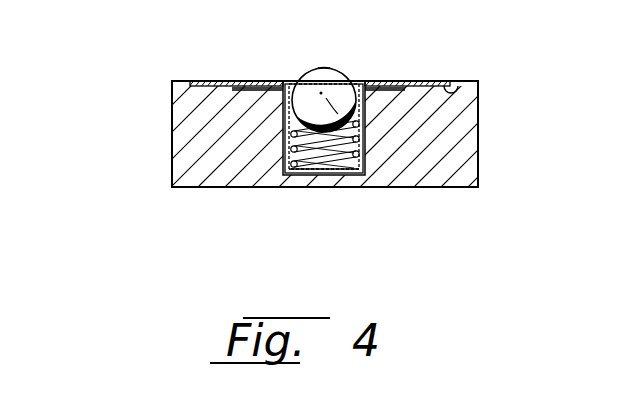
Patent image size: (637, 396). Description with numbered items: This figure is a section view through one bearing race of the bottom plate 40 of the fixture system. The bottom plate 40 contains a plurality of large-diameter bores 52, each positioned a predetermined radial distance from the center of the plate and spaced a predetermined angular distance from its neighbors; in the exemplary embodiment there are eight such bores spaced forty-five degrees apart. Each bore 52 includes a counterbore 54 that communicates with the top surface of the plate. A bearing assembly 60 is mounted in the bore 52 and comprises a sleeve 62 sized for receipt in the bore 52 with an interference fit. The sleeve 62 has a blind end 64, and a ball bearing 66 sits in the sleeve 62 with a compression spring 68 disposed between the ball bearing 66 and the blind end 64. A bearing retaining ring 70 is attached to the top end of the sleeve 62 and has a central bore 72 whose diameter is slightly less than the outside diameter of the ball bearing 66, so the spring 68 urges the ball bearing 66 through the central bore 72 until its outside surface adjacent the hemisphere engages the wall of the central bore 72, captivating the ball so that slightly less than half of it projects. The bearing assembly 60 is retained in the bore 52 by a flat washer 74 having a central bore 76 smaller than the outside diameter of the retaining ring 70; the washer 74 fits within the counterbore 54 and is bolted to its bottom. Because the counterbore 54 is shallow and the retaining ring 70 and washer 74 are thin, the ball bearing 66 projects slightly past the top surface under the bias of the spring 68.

The bottom plate 40 is at (160, 122).
The bore 52 is at (284, 136).
The counterbore 54 is at (462, 91).
The bearing assembly 60 is at (307, 60).
The sleeve 62 is at (364, 172).
The blind end 64 is at (316, 176).
The ball bearing 66 is at (318, 78).
The compression spring 68 is at (300, 175).
The bearing retaining ring 70 is at (366, 84).
The central bore 72 is at (286, 81).
The flat washer 74 is at (398, 84).
The central bore 76 is at (279, 81).